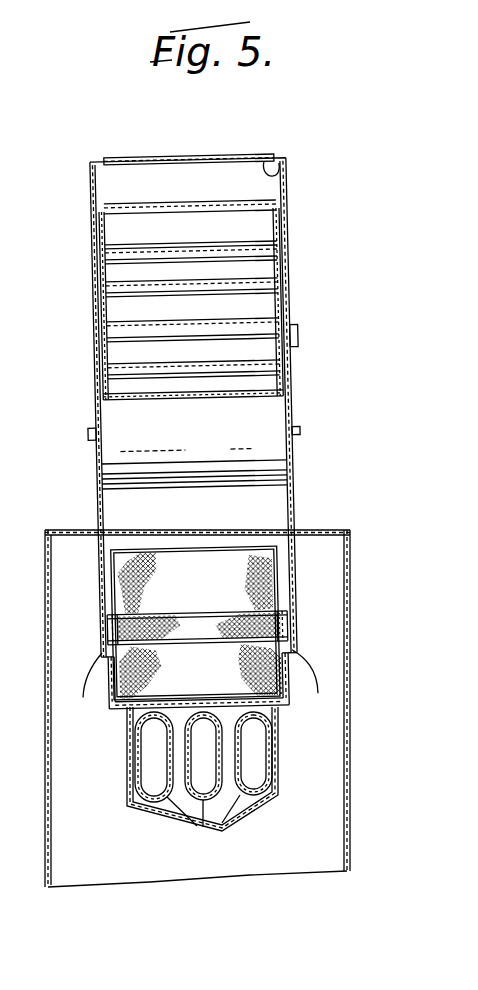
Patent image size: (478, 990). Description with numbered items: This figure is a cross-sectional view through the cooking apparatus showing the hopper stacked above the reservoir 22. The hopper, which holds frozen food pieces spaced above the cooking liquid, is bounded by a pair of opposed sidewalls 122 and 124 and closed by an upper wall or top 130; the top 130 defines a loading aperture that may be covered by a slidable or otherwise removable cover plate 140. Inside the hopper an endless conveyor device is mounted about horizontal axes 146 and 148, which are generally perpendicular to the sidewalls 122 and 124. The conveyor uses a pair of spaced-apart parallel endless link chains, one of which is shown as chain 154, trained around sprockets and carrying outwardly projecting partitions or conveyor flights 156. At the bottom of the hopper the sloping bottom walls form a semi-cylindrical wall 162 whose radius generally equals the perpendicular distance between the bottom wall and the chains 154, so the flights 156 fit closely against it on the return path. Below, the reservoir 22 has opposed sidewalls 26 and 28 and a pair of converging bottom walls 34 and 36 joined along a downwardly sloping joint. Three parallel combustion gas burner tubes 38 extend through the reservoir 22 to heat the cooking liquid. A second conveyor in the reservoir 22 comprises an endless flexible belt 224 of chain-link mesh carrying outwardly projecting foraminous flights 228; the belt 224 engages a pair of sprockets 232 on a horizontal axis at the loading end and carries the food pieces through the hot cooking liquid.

The reservoir 22 is at (116, 769).
The sidewall 26 is at (118, 728).
The sidewall 28 is at (294, 705).
The converging bottom wall 34 is at (247, 818).
The converging bottom wall 36 is at (178, 816).
The combustion gas burner tubes 38 is at (210, 822).
The hopper sidewall 122 is at (98, 296).
The hopper sidewall 124 is at (260, 290).
The upper wall or top 130 is at (289, 170).
The cover plate 140 is at (234, 154).
The horizontal axis 146 is at (90, 428).
The horizontal axis 148 is at (292, 231).
The endless link chain 154 is at (111, 241).
The conveyor flights 156 is at (270, 209).
The semi-cylindrical wall 162 is at (268, 454).
The endless flexible belt 224 is at (191, 625).
The foraminous flights 228 is at (207, 552).
The sprockets 232 is at (96, 617).